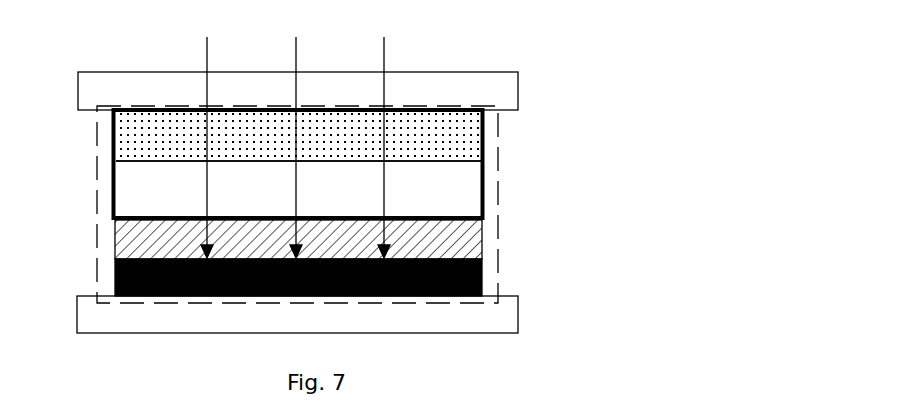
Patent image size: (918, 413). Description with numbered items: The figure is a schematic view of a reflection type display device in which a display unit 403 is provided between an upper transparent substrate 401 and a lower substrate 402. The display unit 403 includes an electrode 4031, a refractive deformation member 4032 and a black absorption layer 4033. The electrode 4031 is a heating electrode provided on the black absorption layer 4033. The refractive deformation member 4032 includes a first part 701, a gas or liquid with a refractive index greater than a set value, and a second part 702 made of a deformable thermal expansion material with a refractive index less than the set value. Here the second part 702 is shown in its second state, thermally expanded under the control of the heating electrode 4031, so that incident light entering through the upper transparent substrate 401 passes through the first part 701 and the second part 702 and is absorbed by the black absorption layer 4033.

The upper transparent substrate 401 is at (493, 90).
The lower substrate 402 is at (512, 320).
The display unit 403 is at (497, 240).
The electrode 4031 is at (115, 248).
The refractive deformation member 4032 is at (112, 183).
The black absorption layer 4033 is at (483, 275).
The first part 701 is at (470, 157).
The second part 702 is at (470, 205).